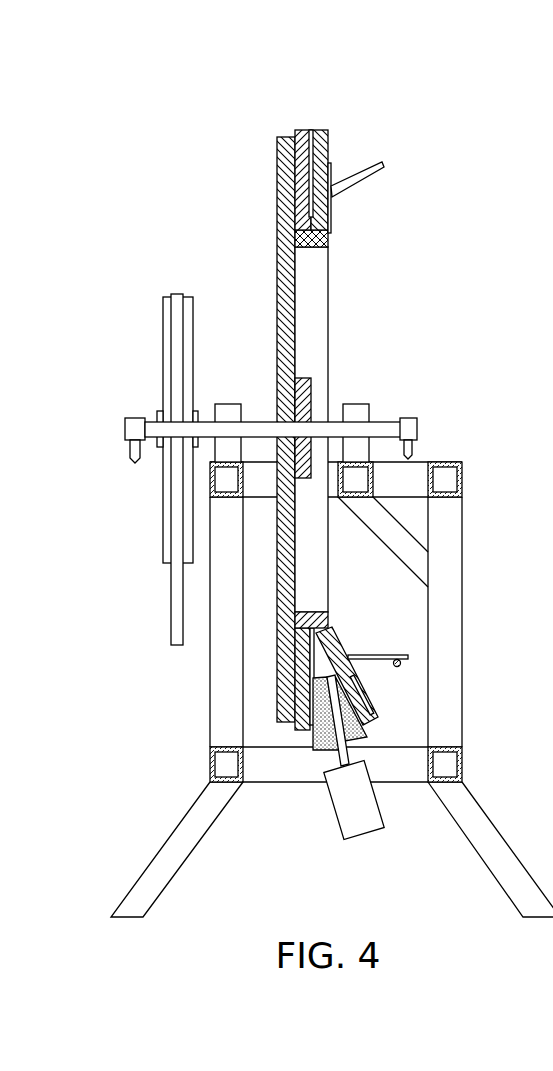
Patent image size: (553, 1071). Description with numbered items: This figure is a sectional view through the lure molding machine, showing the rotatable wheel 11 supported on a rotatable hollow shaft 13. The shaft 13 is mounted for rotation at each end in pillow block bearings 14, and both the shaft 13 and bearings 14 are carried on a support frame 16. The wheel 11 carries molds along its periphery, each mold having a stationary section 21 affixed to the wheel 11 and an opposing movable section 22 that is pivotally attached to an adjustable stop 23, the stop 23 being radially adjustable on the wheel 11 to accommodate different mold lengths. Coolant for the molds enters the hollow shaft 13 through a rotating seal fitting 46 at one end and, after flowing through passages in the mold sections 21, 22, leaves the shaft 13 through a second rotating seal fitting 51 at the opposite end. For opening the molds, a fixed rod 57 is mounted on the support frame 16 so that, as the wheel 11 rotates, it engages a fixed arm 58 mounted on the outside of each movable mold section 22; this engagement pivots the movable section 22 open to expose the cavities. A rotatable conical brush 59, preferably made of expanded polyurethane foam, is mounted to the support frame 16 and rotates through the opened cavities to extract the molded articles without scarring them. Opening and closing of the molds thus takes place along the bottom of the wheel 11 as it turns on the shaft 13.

The rotatable wheel 11 is at (280, 168).
The rotatable hollow shaft 13 is at (383, 427).
The pillow block bearings 14 is at (229, 406).
The support frame 16 is at (450, 617).
The stationary section 21 is at (305, 130).
The movable section 22 is at (322, 130).
The adjustable stop 23 is at (325, 618).
The rotating seal fitting 46 is at (136, 423).
The second rotating seal fitting 51 is at (418, 416).
The fixed rod 57 is at (401, 666).
The fixed arm 58 is at (367, 167).
The rotatable conical brush 59 is at (321, 755).